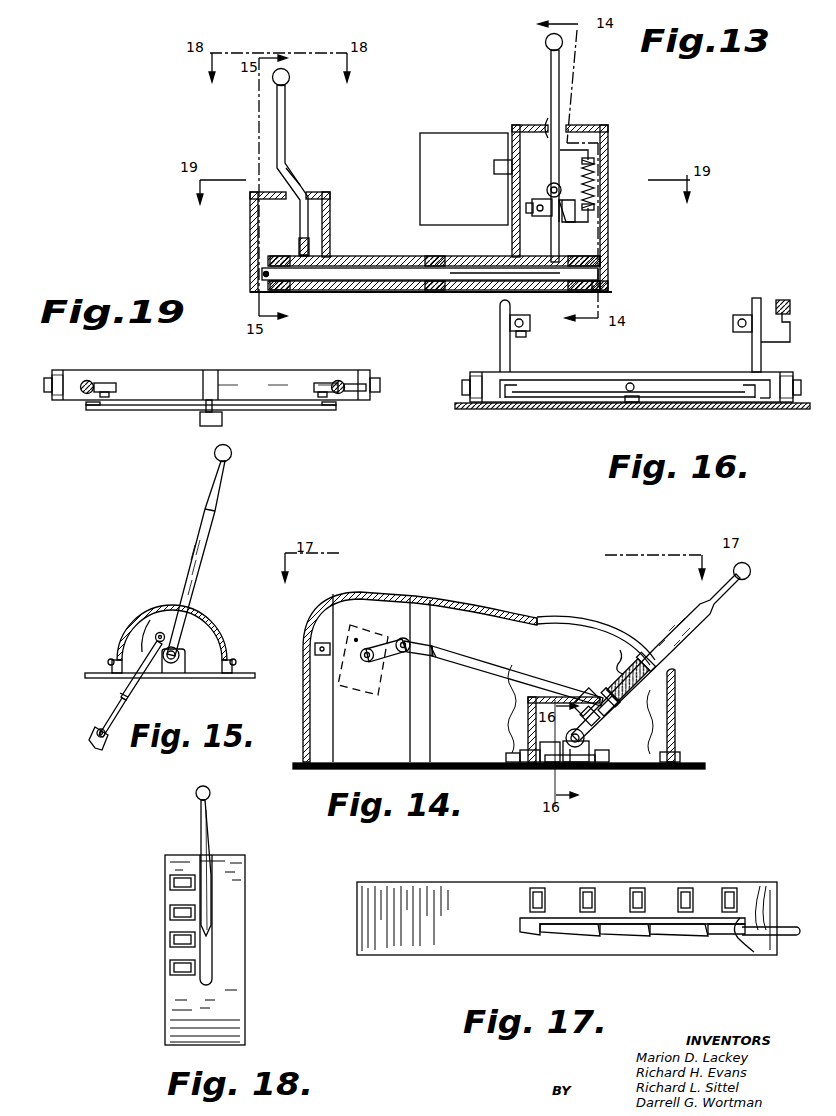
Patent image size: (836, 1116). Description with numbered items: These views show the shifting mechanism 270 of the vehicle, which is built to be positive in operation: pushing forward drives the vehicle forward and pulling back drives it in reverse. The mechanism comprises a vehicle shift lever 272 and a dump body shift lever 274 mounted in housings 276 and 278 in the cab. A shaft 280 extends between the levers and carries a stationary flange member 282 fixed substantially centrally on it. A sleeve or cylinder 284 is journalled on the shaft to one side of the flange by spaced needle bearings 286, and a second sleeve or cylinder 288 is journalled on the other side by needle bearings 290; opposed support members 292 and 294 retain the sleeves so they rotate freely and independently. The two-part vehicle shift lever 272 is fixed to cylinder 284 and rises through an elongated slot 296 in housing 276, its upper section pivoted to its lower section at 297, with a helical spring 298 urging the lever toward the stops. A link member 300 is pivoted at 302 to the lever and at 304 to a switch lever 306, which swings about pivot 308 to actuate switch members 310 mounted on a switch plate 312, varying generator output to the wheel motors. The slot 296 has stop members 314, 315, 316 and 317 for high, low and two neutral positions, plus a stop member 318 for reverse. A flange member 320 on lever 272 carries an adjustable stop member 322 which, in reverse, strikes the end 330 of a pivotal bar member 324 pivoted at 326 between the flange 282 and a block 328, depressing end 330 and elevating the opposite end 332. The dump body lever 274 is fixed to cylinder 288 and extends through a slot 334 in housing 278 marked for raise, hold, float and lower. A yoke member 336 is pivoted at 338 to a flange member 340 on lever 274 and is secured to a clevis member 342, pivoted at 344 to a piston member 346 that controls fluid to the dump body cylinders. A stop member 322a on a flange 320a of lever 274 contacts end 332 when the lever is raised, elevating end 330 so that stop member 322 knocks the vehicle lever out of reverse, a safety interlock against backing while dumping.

In FIG. 13, the shifting mechanism 270 is at (508, 125).
In FIG. 14, the shifting mechanism 270 is at (455, 628).
In FIG. 13, the vehicle shift lever 272 is at (560, 67).
In FIG. 19, the vehicle shift lever 272 is at (341, 380).
In FIG. 16, the vehicle shift lever 272 is at (756, 298).
In FIG. 14, the vehicle shift lever 272 is at (702, 623).
In FIG. 17, the vehicle shift lever 272 is at (796, 920).
In FIG. 13, the dump body shift lever 274 is at (286, 96).
In FIG. 19, the dump body shift lever 274 is at (86, 380).
In FIG. 16, the dump body shift lever 274 is at (500, 317).
In FIG. 15, the dump body shift lever 274 is at (206, 504).
In FIG. 18, the dump body shift lever 274 is at (210, 846).
In FIG. 13, the housing 276 is at (608, 184).
In FIG. 14, the housing 276 is at (524, 618).
In FIG. 17, the housing 276 is at (476, 900).
In FIG. 13, the housing 278 is at (250, 212).
In FIG. 15, the housing 278 is at (214, 620).
In FIG. 18, the housing 278 is at (232, 997).
In FIG. 13, the shaft 280 is at (590, 274).
In FIG. 19, the shaft 280 is at (46, 379).
In FIG. 16, the shaft 280 is at (462, 383).
In FIG. 15, the shaft 280 is at (178, 662).
In FIG. 14, the shaft 280 is at (582, 748).
In FIG. 13, the stationary flange member 282 is at (432, 258).
In FIG. 19, the stationary flange member 282 is at (212, 378).
In FIG. 16, the stationary flange member 282 is at (636, 402).
In FIG. 13, the sleeve or cylinder 284 is at (556, 290).
In FIG. 19, the sleeve or cylinder 284 is at (258, 382).
In FIG. 16, the sleeve or cylinder 284 is at (746, 378).
In FIG. 13, the needle bearings 286 is at (492, 258).
In FIG. 13, the sleeve or cylinder 288 is at (328, 284).
In FIG. 19, the sleeve or cylinder 288 is at (182, 380).
In FIG. 16, the sleeve or cylinder 288 is at (572, 378).
In FIG. 13, the needle bearings 290 is at (282, 258).
In FIG. 13, the support member 292 is at (606, 286).
In FIG. 19, the support member 292 is at (364, 398).
In FIG. 16, the support member 292 is at (788, 372).
In FIG. 14, the support member 292 is at (572, 758).
In FIG. 13, the support member 294 is at (258, 291).
In FIG. 19, the support member 294 is at (60, 398).
In FIG. 16, the support member 294 is at (480, 372).
In FIG. 15, the support member 294 is at (170, 673).
In FIG. 14, the support member 294 is at (499, 766).
In FIG. 13, the slot 296 is at (548, 118).
In FIG. 14, the slot 296 is at (594, 618).
In FIG. 17, the slot 296 is at (762, 886).
In FIG. 13, the pivotal connection 297 is at (551, 186).
In FIG. 14, the pivotal connection 297 is at (613, 655).
In FIG. 13, the helical spring 298 is at (596, 180).
In FIG. 16, the helical spring 298 is at (790, 306).
In FIG. 14, the helical spring 298 is at (660, 680).
In FIG. 13, the link member 300 is at (558, 214).
In FIG. 14, the link member 300 is at (452, 660).
In FIG. 13, the pivot connection 302 is at (570, 222).
In FIG. 14, the pivot connection 302 is at (616, 707).
In FIG. 14, the pivot connection 304 is at (408, 638).
In FIG. 14, the switch lever 306 is at (386, 650).
In FIG. 14, the pivot connection 308 is at (362, 648).
In FIG. 14, the switch members 310 is at (364, 675).
In FIG. 14, the switch base or plate 312 is at (378, 680).
In FIG. 17, the stop member 314 is at (748, 938).
In FIG. 17, the stop member 315 is at (698, 928).
In FIG. 17, the stop member 316 is at (652, 928).
In FIG. 17, the stop member 317 is at (600, 928).
In FIG. 17, the stop member 318 is at (540, 930).
In FIG. 13, the flange member 320 is at (530, 202).
In FIG. 19, the flange member 320 is at (322, 382).
In FIG. 16, the flange member 320 is at (742, 314).
In FIG. 14, the flange member 320 is at (580, 702).
In FIG. 19, the flange 320a is at (106, 382).
In FIG. 16, the flange 320a is at (530, 318).
In FIG. 13, the adjustable stop member 322 is at (532, 208).
In FIG. 19, the adjustable stop member 322 is at (318, 394).
In FIG. 16, the adjustable stop member 322 is at (738, 323).
In FIG. 14, the adjustable stop member 322 is at (565, 700).
In FIG. 19, the stop member 322a is at (110, 392).
In FIG. 16, the stop member 322a is at (521, 337).
In FIG. 19, the pivotal bar member 324 is at (168, 410).
In FIG. 16, the pivotal bar member 324 is at (612, 392).
In FIG. 14, the pivotal bar member 324 is at (555, 762).
In FIG. 19, the pivot 326 is at (220, 416).
In FIG. 16, the pivot 326 is at (633, 383).
In FIG. 14, the pivot 326 is at (520, 752).
In FIG. 19, the block 328 is at (206, 424).
In FIG. 14, the block 328 is at (538, 742).
In FIG. 19, the end of bar 330 is at (326, 410).
In FIG. 16, the end of bar 330 is at (766, 402).
In FIG. 19, the end of bar 332 is at (98, 410).
In FIG. 16, the end of bar 332 is at (500, 400).
In FIG. 13, the slot 334 is at (290, 200).
In FIG. 18, the slot 334 is at (212, 940).
In FIG. 15, the yoke member 336 is at (142, 648).
In FIG. 15, the pivot 338 is at (148, 620).
In FIG. 15, the flange member 340 is at (160, 630).
In FIG. 15, the clevis member 342 is at (115, 701).
In FIG. 15, the pivot 344 is at (99, 727).
In FIG. 15, the piston member 346 is at (93, 738).